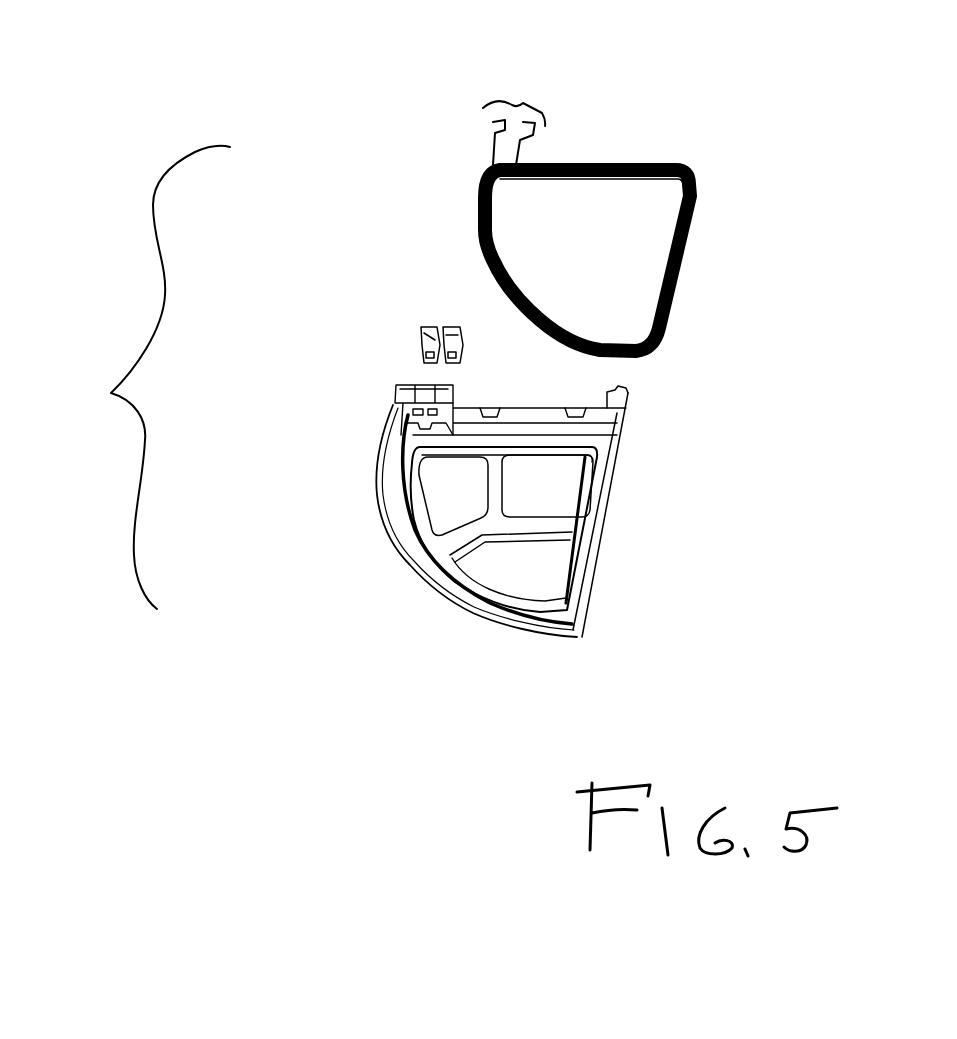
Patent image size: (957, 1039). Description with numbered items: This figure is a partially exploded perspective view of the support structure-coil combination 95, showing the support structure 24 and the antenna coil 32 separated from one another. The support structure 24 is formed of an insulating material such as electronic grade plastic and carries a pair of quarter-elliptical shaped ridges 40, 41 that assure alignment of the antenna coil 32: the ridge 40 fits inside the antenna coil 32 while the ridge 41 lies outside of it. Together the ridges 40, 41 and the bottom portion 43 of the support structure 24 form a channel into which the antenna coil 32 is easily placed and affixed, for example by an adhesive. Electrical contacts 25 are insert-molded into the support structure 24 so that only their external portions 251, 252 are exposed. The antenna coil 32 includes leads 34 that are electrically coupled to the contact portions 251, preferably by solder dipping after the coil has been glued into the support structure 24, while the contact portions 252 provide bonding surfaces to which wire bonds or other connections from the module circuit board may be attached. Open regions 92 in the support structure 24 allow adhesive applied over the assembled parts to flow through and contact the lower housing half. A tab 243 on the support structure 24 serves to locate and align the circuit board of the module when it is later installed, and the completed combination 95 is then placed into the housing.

The support structure 24 is at (375, 637).
The electrical contacts 25 is at (379, 304).
The contact portions 251 is at (463, 319).
The contact portions 252 is at (427, 343).
The antenna coil 32 is at (688, 240).
The leads 34 is at (517, 100).
The ridge 40 is at (473, 572).
The ridge 41 is at (397, 547).
The bottom portion 43 is at (400, 500).
The open regions 92 is at (452, 482).
The support structure-coil combination 95 is at (136, 377).
The tab 243 is at (610, 397).